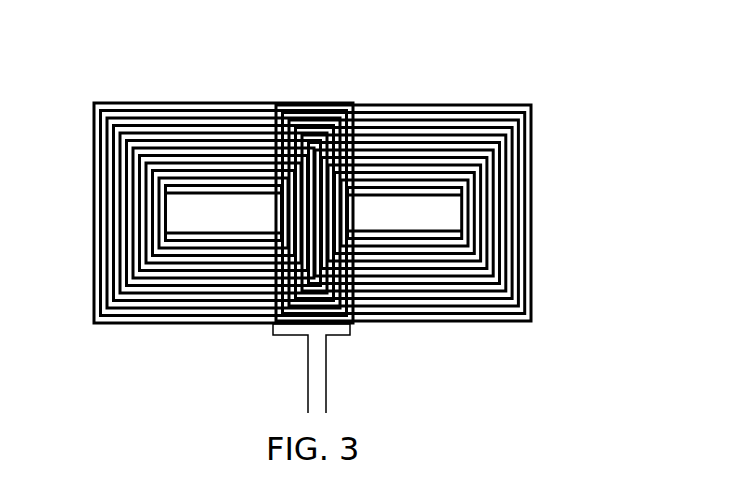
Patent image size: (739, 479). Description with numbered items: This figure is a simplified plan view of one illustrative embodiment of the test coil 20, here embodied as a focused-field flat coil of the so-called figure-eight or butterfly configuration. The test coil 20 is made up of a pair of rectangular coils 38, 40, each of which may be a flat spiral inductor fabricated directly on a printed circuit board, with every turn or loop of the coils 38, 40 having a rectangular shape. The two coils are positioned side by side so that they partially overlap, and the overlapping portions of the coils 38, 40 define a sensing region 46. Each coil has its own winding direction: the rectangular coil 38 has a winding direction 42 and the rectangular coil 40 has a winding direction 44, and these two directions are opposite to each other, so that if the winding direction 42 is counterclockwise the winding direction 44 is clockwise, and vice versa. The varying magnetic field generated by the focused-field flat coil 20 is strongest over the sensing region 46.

The test coil 20 is at (601, 67).
The rectangular coil 38 is at (165, 314).
The rectangular coil 40 is at (493, 314).
The winding direction 42 is at (105, 63).
The winding direction 44 is at (513, 63).
The sensing region 46 is at (334, 324).